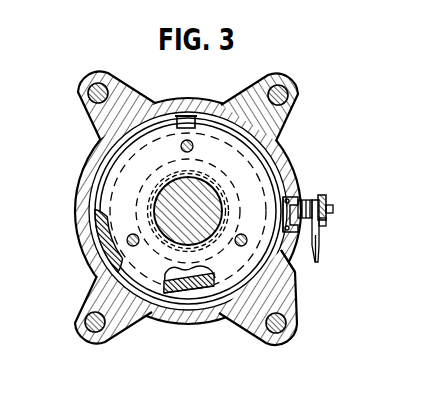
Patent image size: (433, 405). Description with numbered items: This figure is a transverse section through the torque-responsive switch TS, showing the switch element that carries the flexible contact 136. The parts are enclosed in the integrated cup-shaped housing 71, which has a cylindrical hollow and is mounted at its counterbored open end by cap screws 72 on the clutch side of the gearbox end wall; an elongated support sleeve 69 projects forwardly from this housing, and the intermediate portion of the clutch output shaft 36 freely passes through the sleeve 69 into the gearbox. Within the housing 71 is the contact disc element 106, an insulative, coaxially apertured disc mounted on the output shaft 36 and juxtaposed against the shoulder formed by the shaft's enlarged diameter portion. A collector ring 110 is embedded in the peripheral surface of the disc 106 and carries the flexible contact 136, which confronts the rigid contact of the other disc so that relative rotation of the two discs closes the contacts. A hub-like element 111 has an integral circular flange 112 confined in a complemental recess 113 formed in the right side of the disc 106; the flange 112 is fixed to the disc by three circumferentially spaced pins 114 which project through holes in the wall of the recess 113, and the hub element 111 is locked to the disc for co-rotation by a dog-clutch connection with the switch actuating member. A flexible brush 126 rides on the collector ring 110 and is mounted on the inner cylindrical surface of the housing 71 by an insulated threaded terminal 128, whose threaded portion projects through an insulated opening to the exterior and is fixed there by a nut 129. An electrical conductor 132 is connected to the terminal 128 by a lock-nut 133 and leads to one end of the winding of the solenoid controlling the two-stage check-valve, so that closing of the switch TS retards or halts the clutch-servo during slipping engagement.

The clutch output shaft 36 is at (193, 206).
The support sleeve 69 is at (156, 174).
The cup-shaped housing 71 is at (191, 323).
The cap screws 72 is at (88, 95).
The contact disc element 106 is at (117, 182).
The collector ring 110 is at (95, 233).
The hub-like element 111 is at (207, 178).
The circular flange 112 is at (203, 273).
The recess 113 is at (165, 293).
The pins 114 is at (181, 147).
The brush 126 is at (289, 260).
The threaded terminal 128 is at (327, 209).
The nut 129 is at (309, 198).
The electrical conductor 132 is at (319, 261).
The lock-nut 133 is at (325, 223).
The flexible contact 136 is at (187, 116).
The torque-responsive switch TS is at (239, 87).